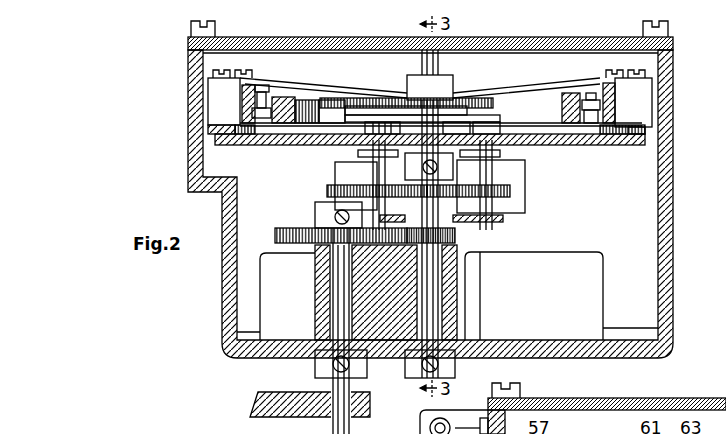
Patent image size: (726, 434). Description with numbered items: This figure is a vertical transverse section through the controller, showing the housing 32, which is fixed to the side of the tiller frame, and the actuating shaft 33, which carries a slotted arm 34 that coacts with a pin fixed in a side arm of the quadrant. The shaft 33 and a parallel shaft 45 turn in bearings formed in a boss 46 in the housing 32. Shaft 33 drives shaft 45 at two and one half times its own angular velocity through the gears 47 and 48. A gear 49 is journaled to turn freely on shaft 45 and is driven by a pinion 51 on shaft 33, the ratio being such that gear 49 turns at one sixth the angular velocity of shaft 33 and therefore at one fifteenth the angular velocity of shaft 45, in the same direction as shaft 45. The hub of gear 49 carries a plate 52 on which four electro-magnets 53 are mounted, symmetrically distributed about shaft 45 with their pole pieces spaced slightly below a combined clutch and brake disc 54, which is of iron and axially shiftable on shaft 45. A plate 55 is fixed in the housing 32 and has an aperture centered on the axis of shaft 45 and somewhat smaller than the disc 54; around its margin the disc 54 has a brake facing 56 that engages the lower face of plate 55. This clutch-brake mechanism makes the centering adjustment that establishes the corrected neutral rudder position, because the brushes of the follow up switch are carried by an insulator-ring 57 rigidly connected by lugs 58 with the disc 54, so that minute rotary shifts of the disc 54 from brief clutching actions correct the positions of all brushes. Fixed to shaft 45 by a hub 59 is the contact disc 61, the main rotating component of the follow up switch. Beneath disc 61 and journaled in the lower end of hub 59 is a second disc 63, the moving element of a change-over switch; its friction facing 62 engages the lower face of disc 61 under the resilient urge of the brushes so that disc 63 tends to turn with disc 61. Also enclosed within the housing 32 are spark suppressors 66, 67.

The housing 32 is at (222, 304).
The actuating shaft 33 is at (330, 383).
The slotted arm 34 is at (278, 412).
The parallel shaft 45 is at (440, 308).
The boss 46 is at (458, 270).
The gear 47 is at (293, 228).
The gear 48 is at (456, 239).
The gear 49 is at (511, 191).
The pinion 51 is at (328, 190).
The plate 52 is at (505, 221).
The electro-magnets 53 is at (338, 173).
The combined clutch and brake disc 54 is at (602, 143).
The plate 55 is at (640, 127).
The brake facing 56 is at (645, 135).
The insulator-ring 57 is at (250, 100).
The lugs 58 is at (397, 121).
The hub 59 is at (421, 80).
The contact disc 61 is at (370, 110).
The friction facing 62 is at (476, 118).
The second disc 63 is at (352, 145).
The spark suppressor 66 is at (588, 282).
The spark suppressor 67 is at (258, 256).